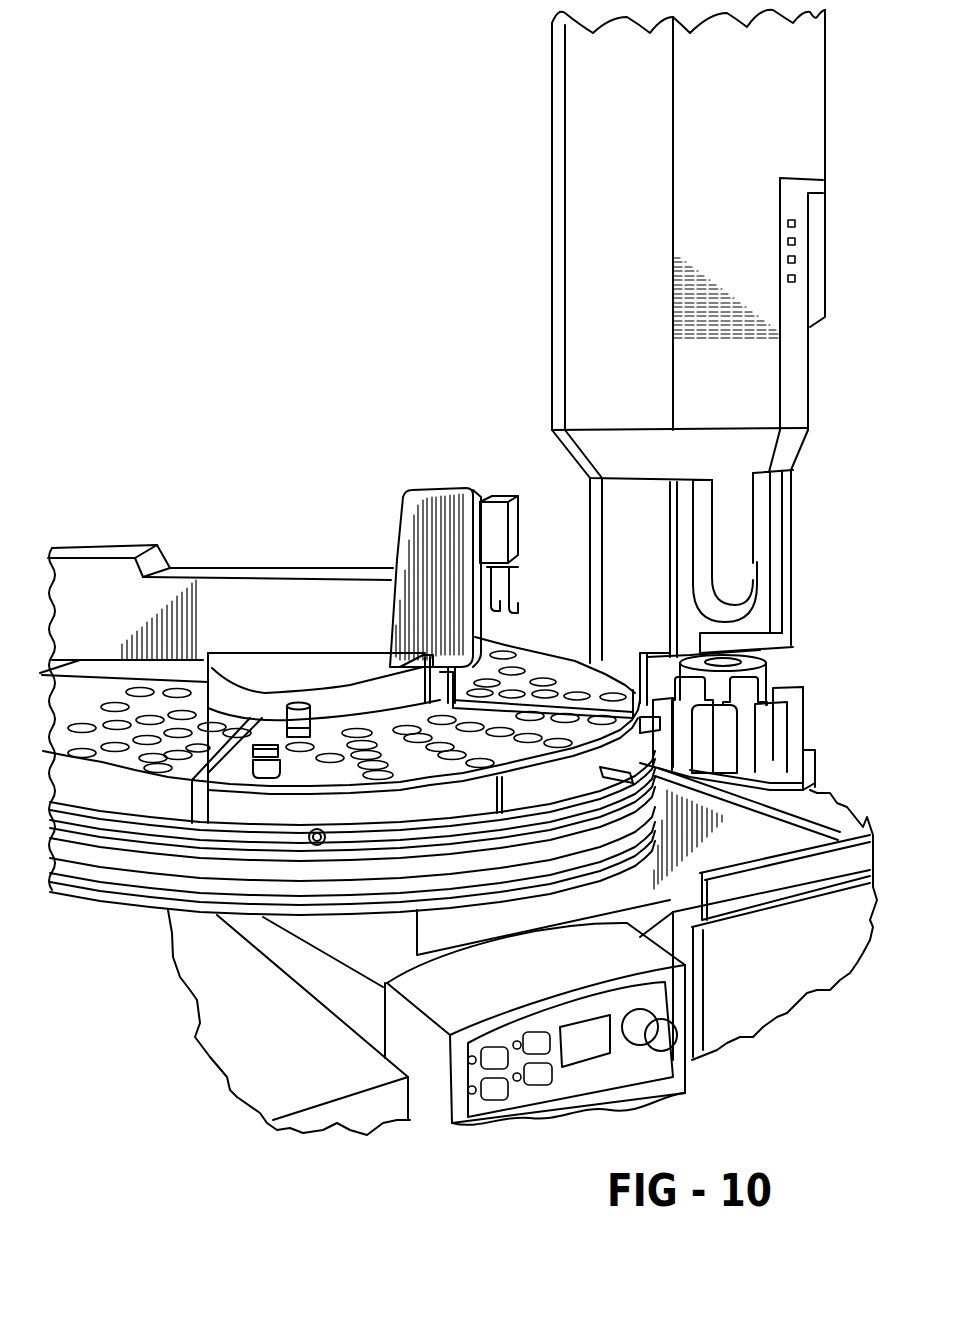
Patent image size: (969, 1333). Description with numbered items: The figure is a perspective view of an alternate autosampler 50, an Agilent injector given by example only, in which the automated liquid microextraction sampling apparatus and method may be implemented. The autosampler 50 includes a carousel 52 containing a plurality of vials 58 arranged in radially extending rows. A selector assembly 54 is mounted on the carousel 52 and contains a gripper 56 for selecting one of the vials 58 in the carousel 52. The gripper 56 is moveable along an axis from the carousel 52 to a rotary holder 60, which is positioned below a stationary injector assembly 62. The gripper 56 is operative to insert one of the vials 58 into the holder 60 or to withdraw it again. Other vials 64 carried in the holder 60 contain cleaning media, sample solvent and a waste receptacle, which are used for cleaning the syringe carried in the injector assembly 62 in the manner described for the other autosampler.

The autosampler 50 is at (270, 368).
The carousel 52 is at (215, 715).
The selector assembly 54 is at (335, 636).
The gripper 56 is at (498, 513).
The vials 58 is at (265, 772).
The rotary holder 60 is at (817, 735).
The injector assembly 62 is at (740, 150).
The vials 64 is at (747, 728).